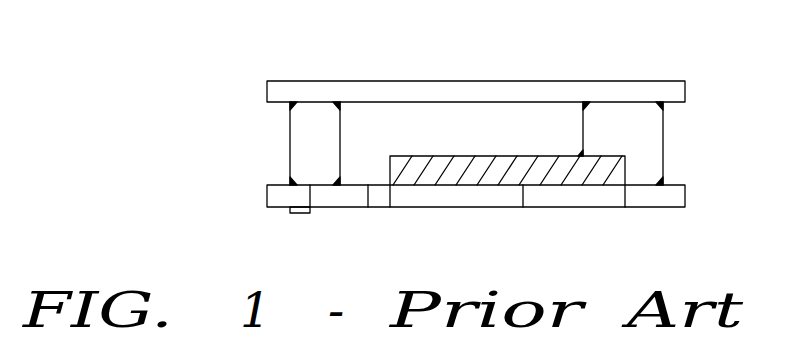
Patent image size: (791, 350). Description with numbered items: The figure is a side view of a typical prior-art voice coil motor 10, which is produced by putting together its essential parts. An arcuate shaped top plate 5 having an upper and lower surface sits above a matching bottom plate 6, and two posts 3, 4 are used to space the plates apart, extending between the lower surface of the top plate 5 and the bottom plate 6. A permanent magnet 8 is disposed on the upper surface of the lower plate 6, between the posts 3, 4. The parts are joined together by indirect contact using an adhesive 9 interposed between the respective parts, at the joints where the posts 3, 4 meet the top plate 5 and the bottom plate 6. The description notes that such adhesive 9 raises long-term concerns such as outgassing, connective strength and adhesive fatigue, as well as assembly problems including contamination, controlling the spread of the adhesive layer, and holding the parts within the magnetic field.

The voice coil motor 10 is at (255, 67).
The post 3 is at (300, 129).
The post 4 is at (657, 195).
The top plate 5 is at (447, 80).
The bottom plate 6 is at (487, 192).
The permanent magnet 8 is at (555, 165).
The adhesive 9 is at (291, 106).